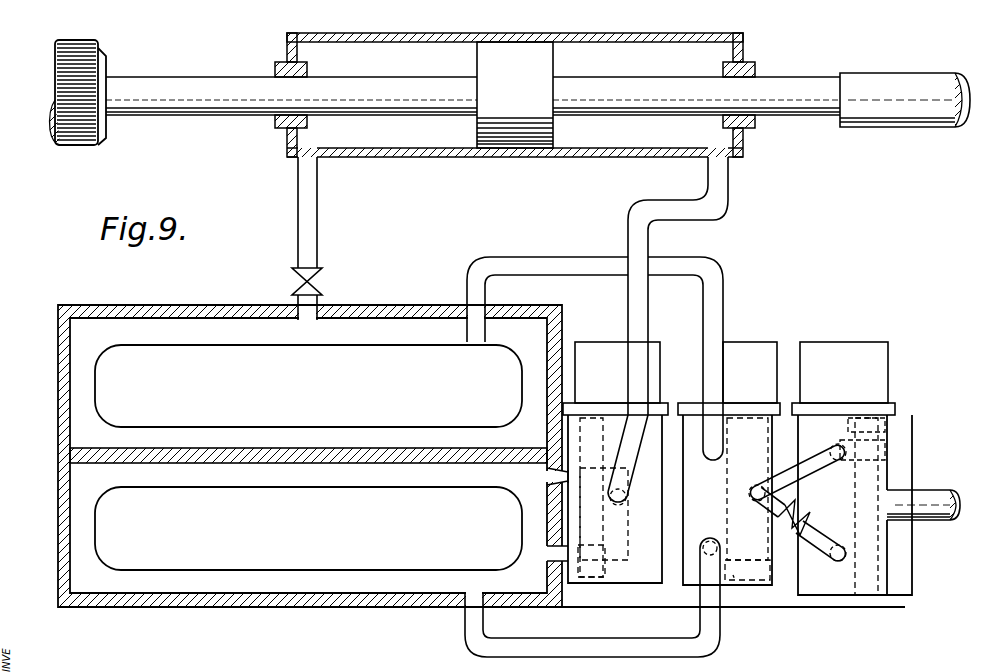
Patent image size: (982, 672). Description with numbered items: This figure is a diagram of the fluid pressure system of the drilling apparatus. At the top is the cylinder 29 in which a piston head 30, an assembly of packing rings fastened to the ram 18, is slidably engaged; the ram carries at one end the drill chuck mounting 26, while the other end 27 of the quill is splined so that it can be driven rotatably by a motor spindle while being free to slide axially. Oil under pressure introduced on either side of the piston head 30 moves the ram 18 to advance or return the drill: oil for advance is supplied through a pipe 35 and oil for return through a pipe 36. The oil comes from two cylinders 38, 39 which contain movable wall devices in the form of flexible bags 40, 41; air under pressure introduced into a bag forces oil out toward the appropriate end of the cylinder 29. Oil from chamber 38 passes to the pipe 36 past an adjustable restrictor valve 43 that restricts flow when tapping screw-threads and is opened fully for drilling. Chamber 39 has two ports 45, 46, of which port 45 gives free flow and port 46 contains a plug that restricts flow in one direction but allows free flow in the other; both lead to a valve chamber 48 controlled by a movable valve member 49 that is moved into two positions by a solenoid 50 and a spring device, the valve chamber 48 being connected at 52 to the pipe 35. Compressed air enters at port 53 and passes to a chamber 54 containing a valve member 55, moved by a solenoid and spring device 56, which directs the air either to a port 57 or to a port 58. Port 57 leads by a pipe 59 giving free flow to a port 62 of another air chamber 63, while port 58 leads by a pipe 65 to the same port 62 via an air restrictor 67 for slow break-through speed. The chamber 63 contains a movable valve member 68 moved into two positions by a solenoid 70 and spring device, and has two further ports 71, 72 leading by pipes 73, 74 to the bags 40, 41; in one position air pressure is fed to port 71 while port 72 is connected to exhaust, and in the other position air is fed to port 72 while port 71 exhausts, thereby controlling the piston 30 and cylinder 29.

The ram 18 is at (407, 100).
The drill chuck mounting 26 is at (88, 70).
The other end of the quill 27 is at (815, 86).
The cylinder 29 is at (286, 35).
The piston head 30 is at (515, 95).
The pipe 35 is at (716, 193).
The pipe 36 is at (298, 200).
The cylinder 38 is at (388, 324).
The cylinder 39 is at (313, 588).
The flexible bag 40 is at (308, 386).
The flexible bag 41 is at (308, 528).
The adjustable restrictor valve 43 is at (294, 279).
The port 45 is at (550, 553).
The port 46 is at (550, 476).
The valve chamber 48 is at (656, 576).
The movable valve member 49 is at (598, 580).
The solenoid 50 is at (594, 348).
The connection 52 is at (620, 505).
The port 53 is at (918, 518).
The chamber 54 is at (908, 572).
The valve member 55 is at (870, 471).
The solenoid and spring device 56 is at (826, 352).
The port 57 is at (838, 450).
The port 58 is at (838, 562).
The pipe 59 is at (797, 472).
The port 62 is at (756, 494).
The air chamber 63 is at (765, 578).
The pipe 65 is at (812, 548).
The air restrictor 67 is at (812, 532).
The movable valve member 68 is at (734, 578).
The solenoid 70 is at (740, 352).
The port 71 is at (707, 452).
The port 72 is at (710, 541).
The pipe 73 is at (548, 264).
The pipe 74 is at (600, 648).